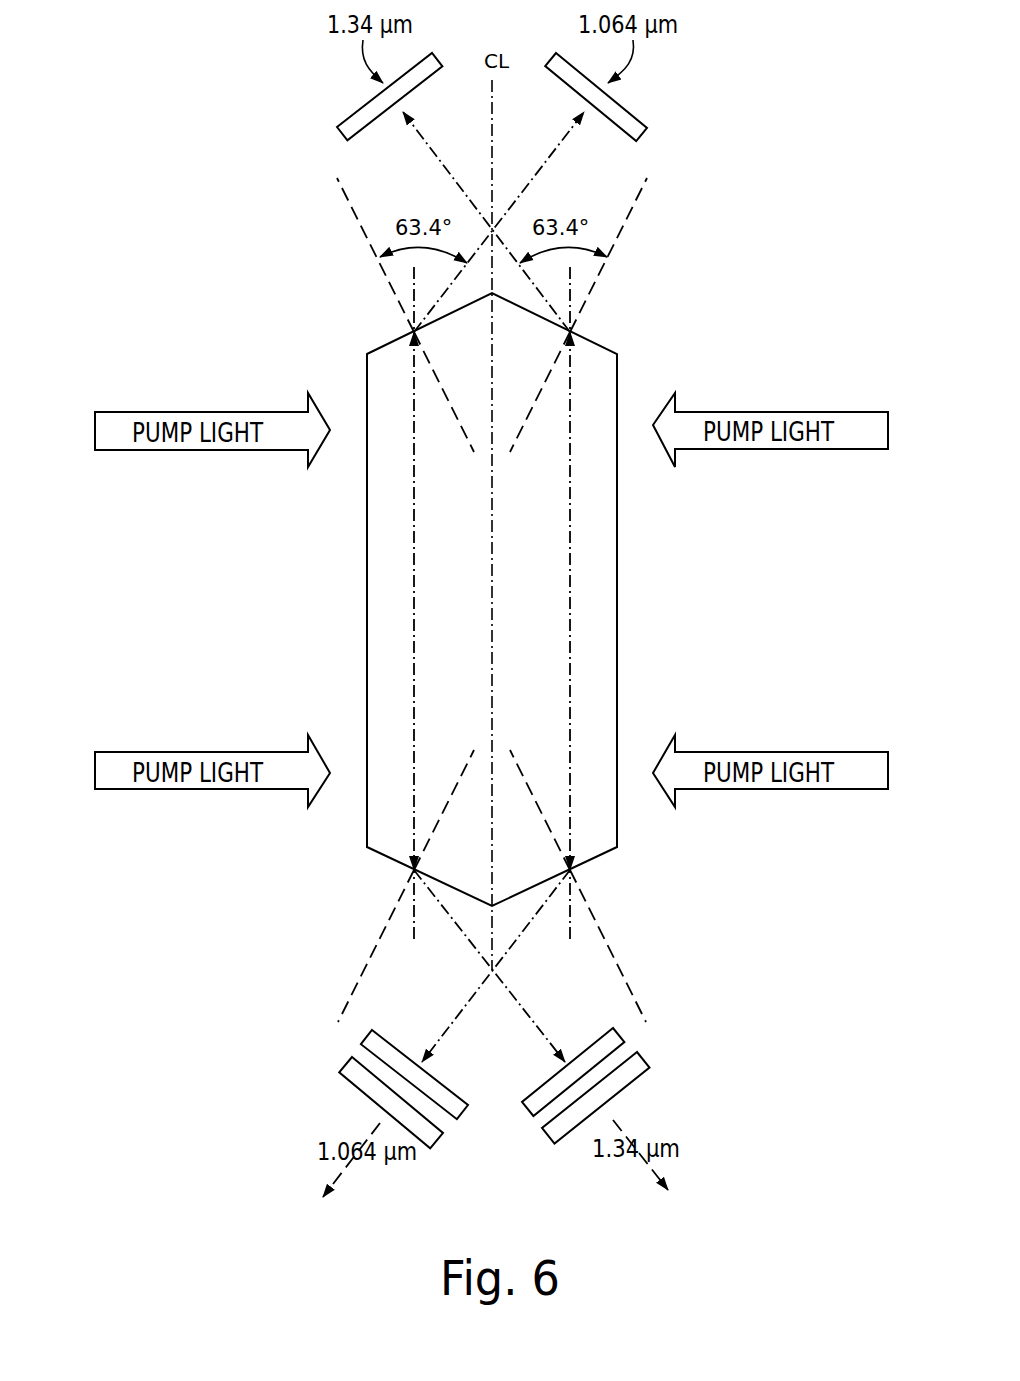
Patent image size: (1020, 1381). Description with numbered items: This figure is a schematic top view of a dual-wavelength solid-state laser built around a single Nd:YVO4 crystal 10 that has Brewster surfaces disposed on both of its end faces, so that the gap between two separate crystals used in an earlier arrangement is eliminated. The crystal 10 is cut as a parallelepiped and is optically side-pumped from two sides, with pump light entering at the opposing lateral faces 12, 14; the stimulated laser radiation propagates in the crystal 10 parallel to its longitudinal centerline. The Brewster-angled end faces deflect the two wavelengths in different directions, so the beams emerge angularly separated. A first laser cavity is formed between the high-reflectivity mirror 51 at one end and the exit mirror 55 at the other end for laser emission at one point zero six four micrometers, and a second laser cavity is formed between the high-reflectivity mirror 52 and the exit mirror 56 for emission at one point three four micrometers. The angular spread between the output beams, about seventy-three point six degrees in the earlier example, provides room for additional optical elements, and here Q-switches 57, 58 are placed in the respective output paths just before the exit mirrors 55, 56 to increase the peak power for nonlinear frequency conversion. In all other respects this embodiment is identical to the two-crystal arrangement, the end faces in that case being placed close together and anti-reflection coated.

The Nd:YVO4 crystal 10 is at (657, 547).
The lateral face 12 is at (617, 702).
The lateral face 14 is at (367, 640).
The high-reflectivity mirror 51 is at (337, 133).
The high-reflectivity mirror 52 is at (648, 132).
The exit mirror 55 is at (350, 1060).
The exit mirror 56 is at (642, 1060).
The Q-switch 57 is at (362, 1035).
The Q-switch 58 is at (622, 1035).